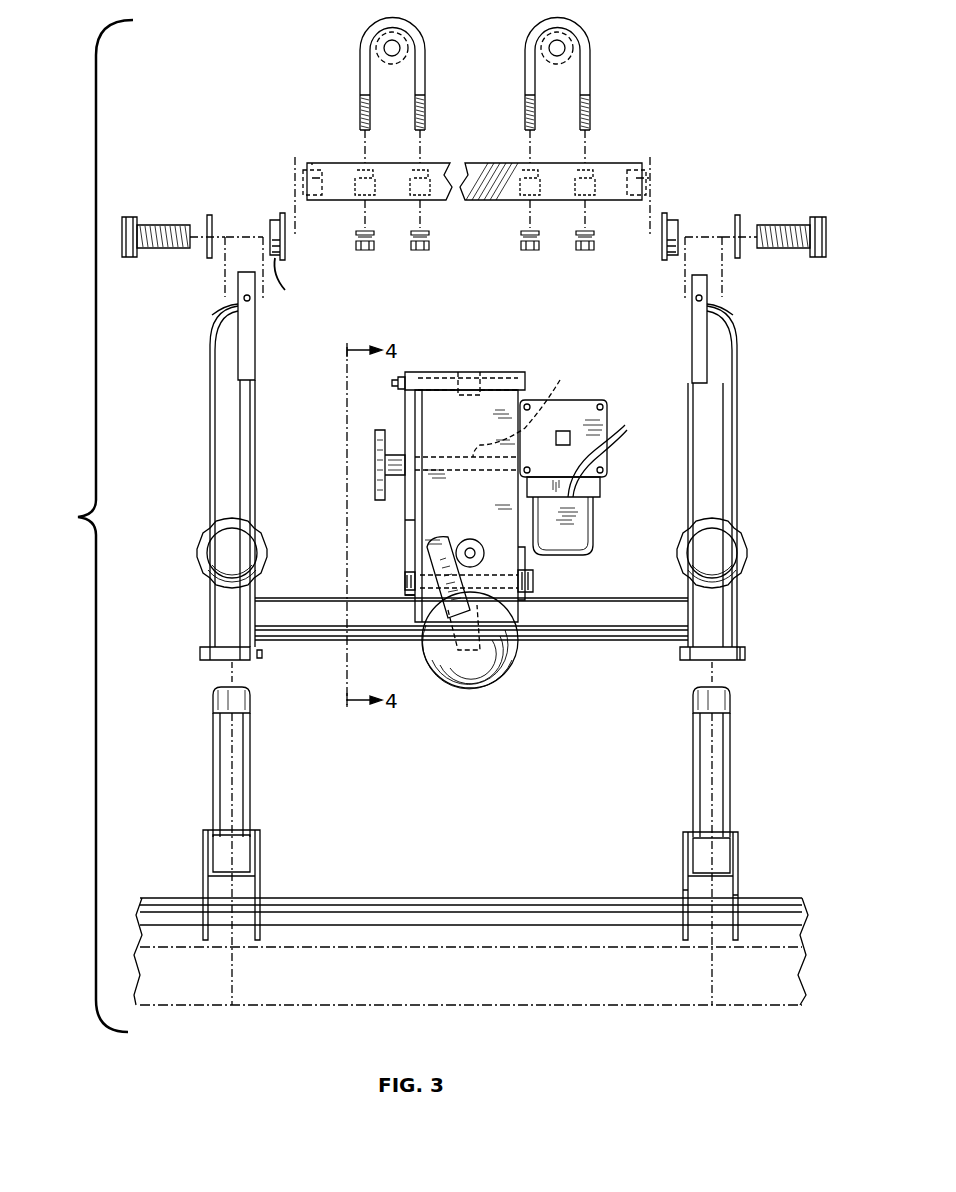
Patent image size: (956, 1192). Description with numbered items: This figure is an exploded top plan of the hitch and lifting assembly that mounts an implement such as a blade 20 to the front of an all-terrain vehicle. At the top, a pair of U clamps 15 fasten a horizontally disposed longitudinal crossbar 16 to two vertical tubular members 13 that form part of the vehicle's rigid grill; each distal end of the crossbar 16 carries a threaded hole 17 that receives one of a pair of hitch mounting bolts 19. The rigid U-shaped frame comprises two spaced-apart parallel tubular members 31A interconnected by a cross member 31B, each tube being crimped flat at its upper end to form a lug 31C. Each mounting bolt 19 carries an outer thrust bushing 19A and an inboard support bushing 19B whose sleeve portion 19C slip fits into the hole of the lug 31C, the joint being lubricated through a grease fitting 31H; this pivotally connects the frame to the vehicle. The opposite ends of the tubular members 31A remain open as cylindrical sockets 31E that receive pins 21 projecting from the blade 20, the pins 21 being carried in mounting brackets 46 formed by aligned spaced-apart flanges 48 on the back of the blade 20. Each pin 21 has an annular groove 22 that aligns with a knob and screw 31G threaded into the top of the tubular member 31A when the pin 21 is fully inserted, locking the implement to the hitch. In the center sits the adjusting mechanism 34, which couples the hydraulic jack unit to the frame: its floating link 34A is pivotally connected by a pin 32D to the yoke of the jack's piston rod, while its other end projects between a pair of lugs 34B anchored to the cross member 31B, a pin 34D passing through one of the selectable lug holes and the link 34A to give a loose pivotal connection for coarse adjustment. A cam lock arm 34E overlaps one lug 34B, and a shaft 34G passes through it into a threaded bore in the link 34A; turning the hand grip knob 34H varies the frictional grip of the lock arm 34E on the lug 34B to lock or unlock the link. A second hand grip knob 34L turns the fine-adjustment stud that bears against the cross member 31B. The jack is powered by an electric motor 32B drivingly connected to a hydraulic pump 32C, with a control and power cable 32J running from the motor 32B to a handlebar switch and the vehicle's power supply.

The tubular members 13 is at (408, 35).
The U clamps 15 is at (425, 62).
The crossbar 16 is at (610, 163).
The threaded hole 17 is at (305, 152).
The hitch mounting bolts 19 is at (152, 257).
The outer thrust bushing 19A is at (210, 215).
The inboard support bushing 19B is at (281, 213).
The sleeve portion 19C is at (302, 280).
The blade 20 is at (455, 918).
The pins 21 is at (248, 790).
The annular groove 22 is at (250, 715).
The tubular members 31A is at (215, 437).
The cross member 31B is at (305, 640).
The lug 31C is at (257, 315).
The cylindrical sockets 31E is at (210, 660).
The knob and screw 31G is at (200, 550).
The grease fitting 31H is at (240, 306).
The electric motor 32B is at (598, 497).
The hydraulic pump 32C is at (590, 400).
The pin 32D is at (392, 383).
The control and power cable 32J is at (627, 427).
The adjusting mechanism 34 is at (496, 360).
The link 34A is at (440, 405).
The lugs 34B is at (405, 583).
The pin 34D is at (533, 585).
The cam lock arm 34E is at (405, 545).
The shaft 34G is at (529, 405).
The hand grip knob 34H is at (375, 465).
The hand grip knob 34L is at (470, 688).
The mounting brackets 46 is at (262, 893).
The flanges 48 is at (683, 890).